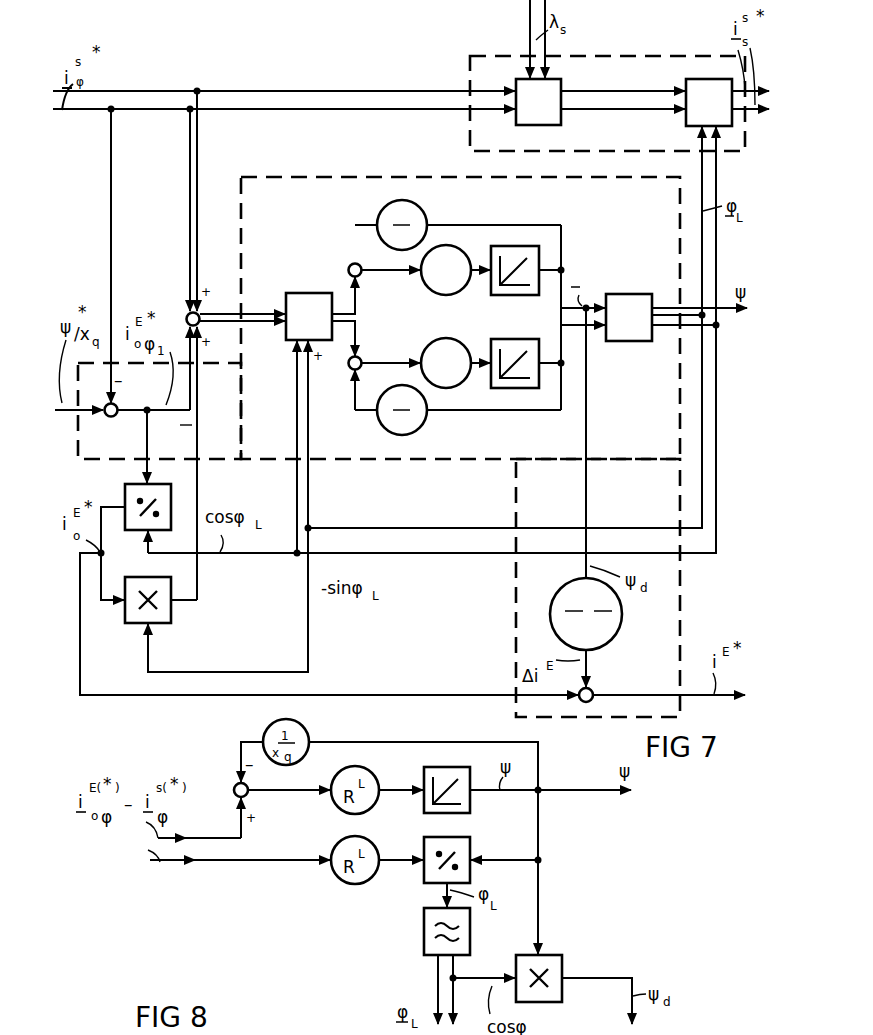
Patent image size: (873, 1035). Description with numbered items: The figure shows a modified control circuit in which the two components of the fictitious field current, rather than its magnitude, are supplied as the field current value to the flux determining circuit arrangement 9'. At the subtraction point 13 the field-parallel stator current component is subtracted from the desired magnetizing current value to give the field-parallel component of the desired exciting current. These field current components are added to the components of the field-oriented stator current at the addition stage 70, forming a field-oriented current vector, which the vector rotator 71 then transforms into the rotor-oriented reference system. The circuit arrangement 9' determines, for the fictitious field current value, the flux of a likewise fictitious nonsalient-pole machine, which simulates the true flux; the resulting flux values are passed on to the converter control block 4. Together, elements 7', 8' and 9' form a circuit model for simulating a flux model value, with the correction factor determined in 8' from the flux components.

The converter control / vector rotator block 4 is at (633, 56).
The circuit arrangement 9' is at (494, 295).
The addition stage 70 is at (186, 316).
The vector rotator 71 is at (304, 293).
The subtraction point 13 is at (107, 418).
The circuit model element 7' is at (148, 429).
The circuit model element 8' is at (610, 512).